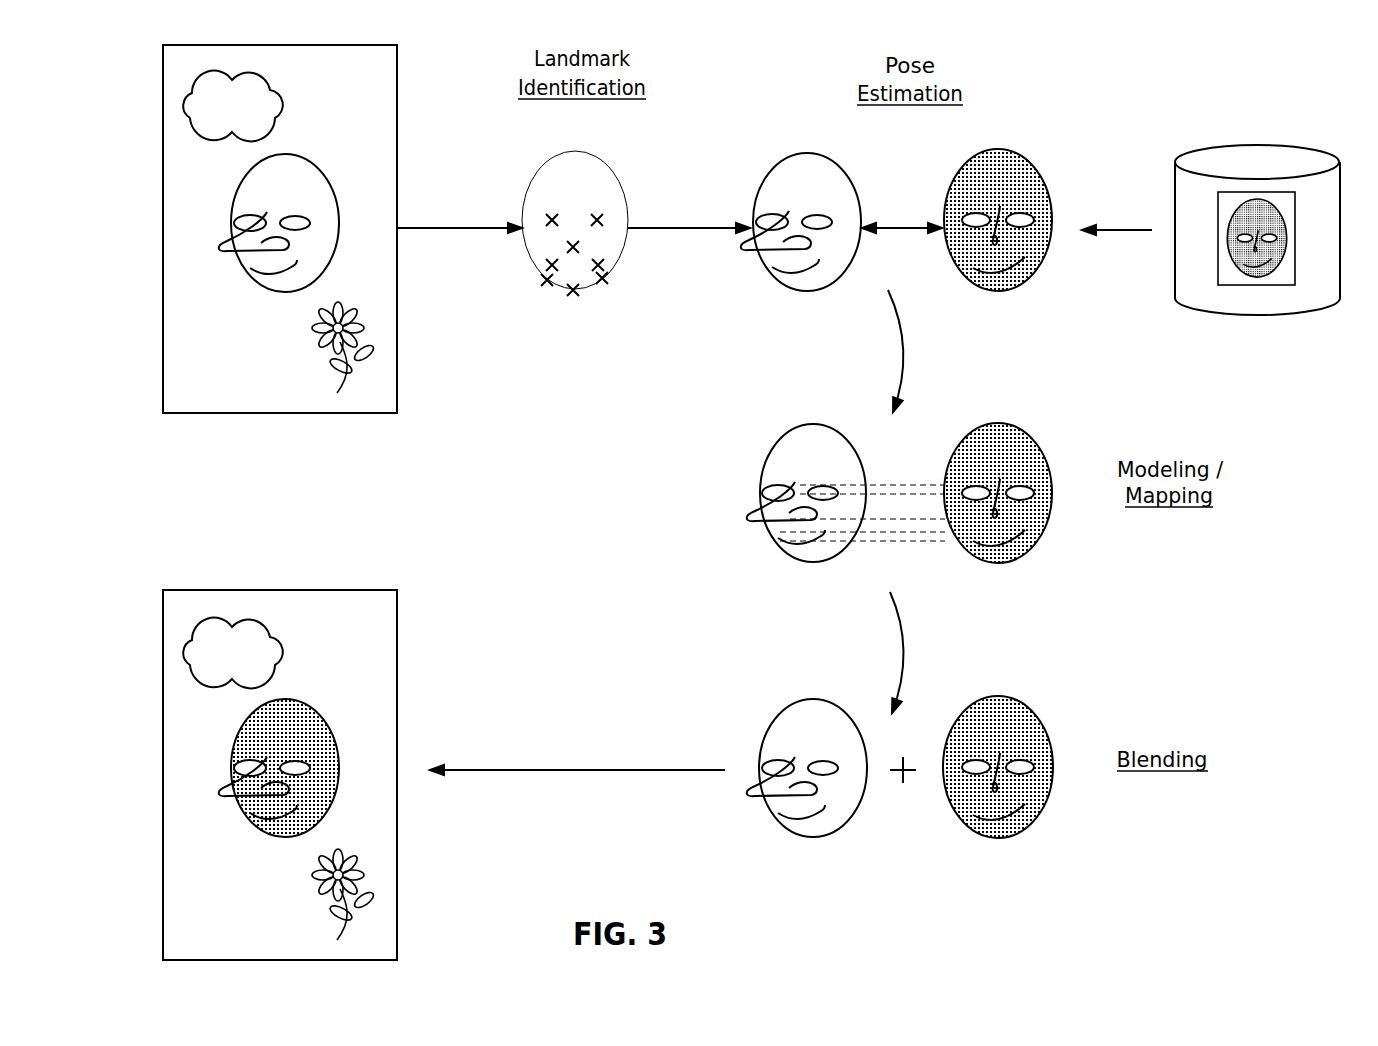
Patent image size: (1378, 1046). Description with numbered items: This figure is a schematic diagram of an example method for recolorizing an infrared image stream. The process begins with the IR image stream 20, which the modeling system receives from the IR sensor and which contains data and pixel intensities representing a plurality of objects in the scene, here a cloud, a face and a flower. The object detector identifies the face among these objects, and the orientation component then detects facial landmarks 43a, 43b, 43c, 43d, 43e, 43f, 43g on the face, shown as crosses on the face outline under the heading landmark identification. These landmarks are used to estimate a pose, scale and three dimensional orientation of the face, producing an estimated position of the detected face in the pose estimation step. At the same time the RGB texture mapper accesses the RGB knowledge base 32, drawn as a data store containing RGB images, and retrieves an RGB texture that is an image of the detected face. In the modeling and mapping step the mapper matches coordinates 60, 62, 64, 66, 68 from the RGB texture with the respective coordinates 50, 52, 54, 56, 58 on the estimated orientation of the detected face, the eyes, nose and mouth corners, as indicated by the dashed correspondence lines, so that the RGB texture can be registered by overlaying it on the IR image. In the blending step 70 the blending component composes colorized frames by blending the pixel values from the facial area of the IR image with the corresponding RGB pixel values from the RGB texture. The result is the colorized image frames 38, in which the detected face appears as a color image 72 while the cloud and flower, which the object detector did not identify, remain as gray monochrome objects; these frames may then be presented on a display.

The IR image stream 20 is at (397, 83).
The facial landmark 43a is at (601, 216).
The facial landmark 43b is at (606, 265).
The facial landmark 43c is at (606, 281).
The facial landmark 43d is at (574, 295).
The facial landmark 43e is at (545, 284).
The facial landmark 43f is at (547, 265).
The facial landmark 43g is at (548, 216).
The RGB knowledge base 32 is at (1256, 224).
The coordinate 50 is at (753, 469).
The coordinate 52 is at (848, 467).
The coordinate 54 is at (766, 523).
The coordinate 56 is at (785, 556).
The coordinate 58 is at (829, 552).
The coordinate 60 is at (956, 460).
The coordinate 62 is at (1041, 469).
The coordinate 64 is at (967, 521).
The coordinate 66 is at (983, 556).
The coordinate 68 is at (1025, 551).
The blending 70 is at (1047, 671).
The colorized image frames 38 is at (397, 643).
The color image 72 is at (320, 711).